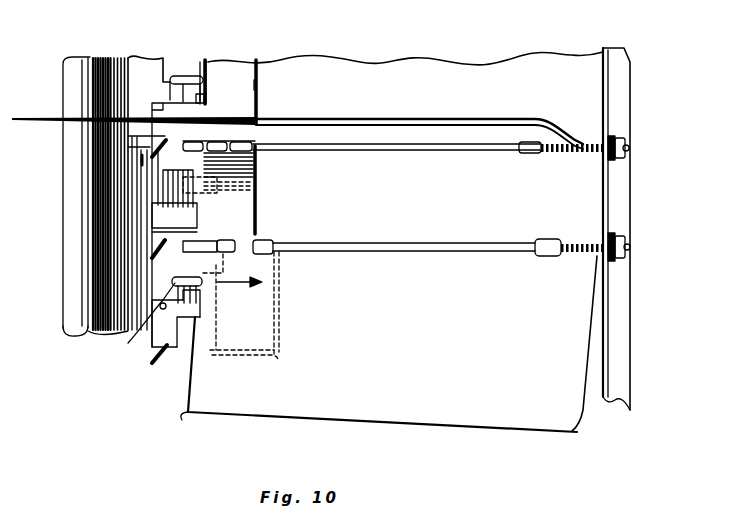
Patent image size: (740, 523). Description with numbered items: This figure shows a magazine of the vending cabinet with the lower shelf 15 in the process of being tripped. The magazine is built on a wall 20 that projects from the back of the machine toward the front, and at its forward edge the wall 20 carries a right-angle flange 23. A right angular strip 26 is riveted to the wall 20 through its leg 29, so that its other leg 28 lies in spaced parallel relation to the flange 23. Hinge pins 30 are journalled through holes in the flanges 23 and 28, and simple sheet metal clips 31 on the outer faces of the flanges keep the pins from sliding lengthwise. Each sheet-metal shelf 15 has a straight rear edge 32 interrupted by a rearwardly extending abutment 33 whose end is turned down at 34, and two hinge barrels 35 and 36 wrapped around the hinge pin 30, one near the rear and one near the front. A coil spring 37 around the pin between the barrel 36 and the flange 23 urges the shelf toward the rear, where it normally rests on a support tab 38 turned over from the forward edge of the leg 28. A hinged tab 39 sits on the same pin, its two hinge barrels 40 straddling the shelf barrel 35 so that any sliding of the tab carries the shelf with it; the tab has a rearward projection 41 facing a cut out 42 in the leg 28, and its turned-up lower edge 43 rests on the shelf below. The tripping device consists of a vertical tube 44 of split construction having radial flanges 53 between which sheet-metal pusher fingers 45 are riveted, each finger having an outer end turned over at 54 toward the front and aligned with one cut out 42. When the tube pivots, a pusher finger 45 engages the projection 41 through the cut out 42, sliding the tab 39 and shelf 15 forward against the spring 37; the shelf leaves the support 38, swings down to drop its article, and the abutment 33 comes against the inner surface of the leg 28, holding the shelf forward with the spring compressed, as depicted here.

The shelf 15 is at (497, 119).
The wall 20 is at (421, 62).
The flange 23 is at (628, 101).
The right angular strip 26 is at (258, 83).
The leg 28 is at (160, 104).
The leg 29 is at (257, 62).
The hinge pin 30 is at (422, 151).
The sheet metal clip 31 is at (624, 160).
The rear edge 32 is at (52, 123).
The abutment 33 is at (190, 303).
The turned-down end 34 is at (134, 150).
The hinge barrel 35 is at (230, 143).
The hinge barrel 36 is at (530, 154).
The coil spring 37 is at (580, 144).
The tab 38 is at (166, 142).
The hinged tab 39 is at (245, 197).
The hinge barrel 40 is at (209, 142).
The projection 41 is at (205, 185).
The cut out 42 is at (200, 97).
The lower edge 43 is at (276, 359).
The vertical tube 44 is at (68, 57).
The pusher finger 45 is at (170, 78).
The radial flange 53 is at (118, 57).
The turned-over outer end 54 is at (190, 76).